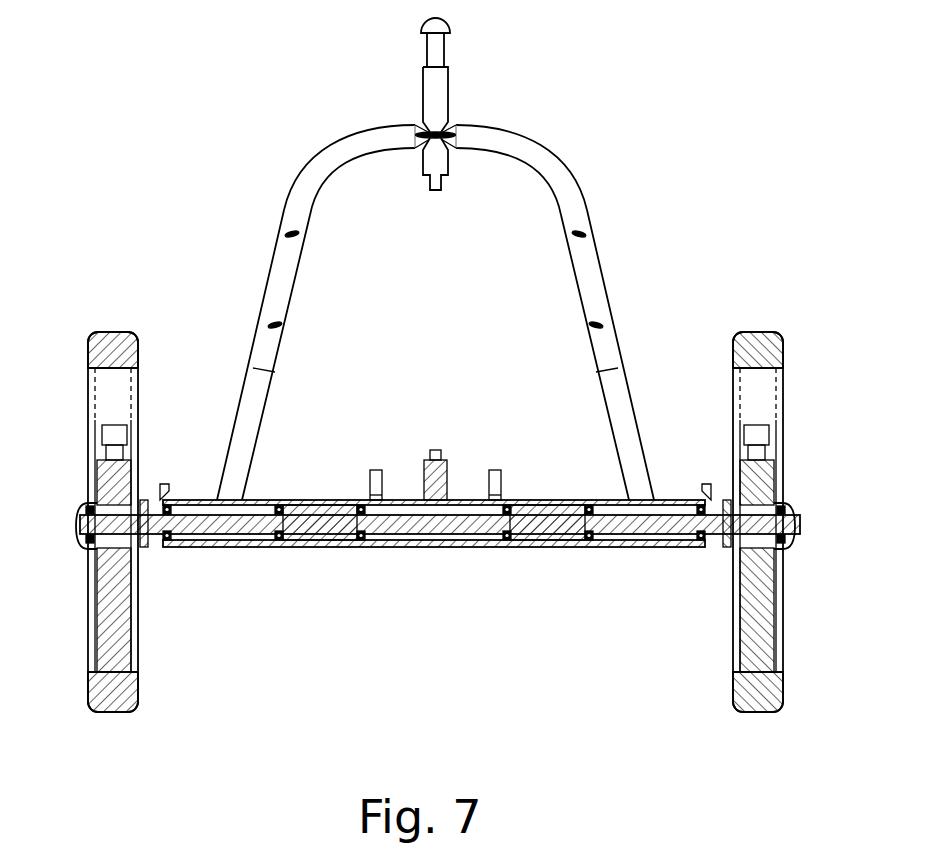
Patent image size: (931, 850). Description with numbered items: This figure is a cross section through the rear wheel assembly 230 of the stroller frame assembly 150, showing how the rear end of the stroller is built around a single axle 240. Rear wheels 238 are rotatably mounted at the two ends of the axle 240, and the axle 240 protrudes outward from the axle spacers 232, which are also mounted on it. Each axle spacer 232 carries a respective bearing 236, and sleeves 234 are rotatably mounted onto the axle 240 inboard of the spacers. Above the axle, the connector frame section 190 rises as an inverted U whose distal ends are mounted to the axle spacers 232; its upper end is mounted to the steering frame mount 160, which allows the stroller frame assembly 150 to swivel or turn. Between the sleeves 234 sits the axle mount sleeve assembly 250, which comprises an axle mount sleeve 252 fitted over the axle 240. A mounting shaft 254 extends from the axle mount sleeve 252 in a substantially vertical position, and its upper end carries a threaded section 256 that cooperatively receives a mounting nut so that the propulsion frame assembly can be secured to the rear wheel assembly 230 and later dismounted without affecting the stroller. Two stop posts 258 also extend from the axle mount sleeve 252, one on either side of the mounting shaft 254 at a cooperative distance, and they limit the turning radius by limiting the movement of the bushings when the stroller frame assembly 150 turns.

The stroller frame assembly 150 is at (443, 292).
The steering frame mount 160 is at (452, 95).
The connector frame section 190 is at (298, 282).
The rear wheel assembly 230 is at (462, 473).
The axle spacers 232 is at (262, 500).
The sleeves 234 is at (360, 547).
The bearings 236 is at (277, 547).
The rear wheels 238 is at (112, 331).
The axle 240 is at (791, 512).
The axle mount sleeve assembly 250 is at (439, 421).
The axle mount sleeve 252 is at (418, 548).
The mounting shaft 254 is at (426, 462).
The threaded section 256 is at (434, 450).
The stop posts 258 is at (376, 470).